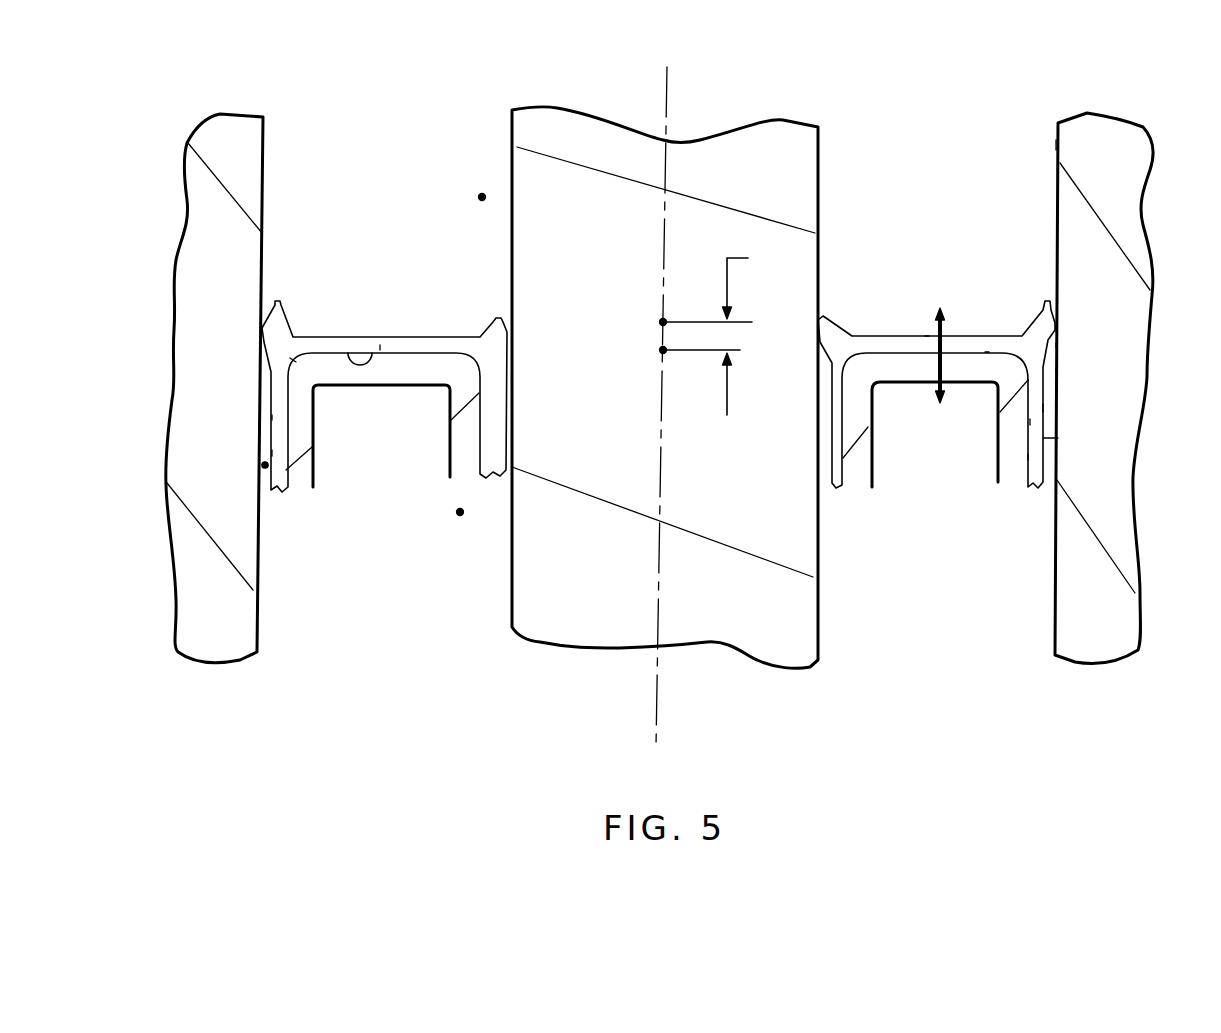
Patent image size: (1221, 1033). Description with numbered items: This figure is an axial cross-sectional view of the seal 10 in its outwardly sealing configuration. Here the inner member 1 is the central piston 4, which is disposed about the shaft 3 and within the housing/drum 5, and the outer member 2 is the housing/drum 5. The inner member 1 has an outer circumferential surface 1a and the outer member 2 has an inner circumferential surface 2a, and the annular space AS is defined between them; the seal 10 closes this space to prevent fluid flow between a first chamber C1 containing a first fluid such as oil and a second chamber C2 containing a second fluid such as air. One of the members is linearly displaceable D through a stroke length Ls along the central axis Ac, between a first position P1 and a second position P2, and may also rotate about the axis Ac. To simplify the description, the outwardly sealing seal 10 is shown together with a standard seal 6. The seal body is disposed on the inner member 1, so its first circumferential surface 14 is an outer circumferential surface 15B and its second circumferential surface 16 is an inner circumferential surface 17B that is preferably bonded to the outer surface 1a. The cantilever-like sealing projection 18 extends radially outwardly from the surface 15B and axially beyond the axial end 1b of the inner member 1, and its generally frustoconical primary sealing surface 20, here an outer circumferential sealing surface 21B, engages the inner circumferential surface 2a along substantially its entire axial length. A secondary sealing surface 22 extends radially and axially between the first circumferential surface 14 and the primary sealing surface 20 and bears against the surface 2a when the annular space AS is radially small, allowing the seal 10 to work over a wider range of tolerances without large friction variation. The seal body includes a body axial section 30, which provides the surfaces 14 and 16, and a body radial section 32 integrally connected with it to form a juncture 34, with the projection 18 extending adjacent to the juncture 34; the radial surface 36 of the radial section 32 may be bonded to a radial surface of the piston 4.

The outer member 2 is at (1115, 140).
The inner circumferential surface 2a is at (1058, 145).
The shaft 3 is at (810, 623).
The central piston 4 is at (415, 373).
The housing/drum 5 is at (250, 165).
The standard seal 6 is at (828, 327).
The seal 10 is at (312, 262).
The inner member 1 is at (927, 338).
The outer circumferential surface 1a is at (283, 417).
The axial end 1b is at (987, 348).
The first circumferential surface 14 is at (1053, 409).
The outer circumferential surface 15B is at (1058, 438).
The second circumferential surface 16 is at (1028, 422).
The inner circumferential surface 17B is at (1030, 457).
The sealing projection 18 is at (253, 327).
The primary sealing surface 20 is at (1066, 327).
The outer circumferential sealing surface 21B is at (1058, 345).
The secondary sealing surface 22 is at (1058, 370).
The body axial section 30 is at (278, 453).
The body radial section 32 is at (353, 342).
The juncture 34 is at (293, 360).
The radial surface 36 is at (380, 380).
The annular space AS is at (260, 468).
The first chamber C1 is at (482, 197).
The second chamber C2 is at (460, 512).
The central axis Ac is at (663, 90).
The first position P1 is at (663, 352).
The second position P2 is at (663, 317).
The stroke length Ls is at (751, 332).
The linear displacement D is at (947, 345).